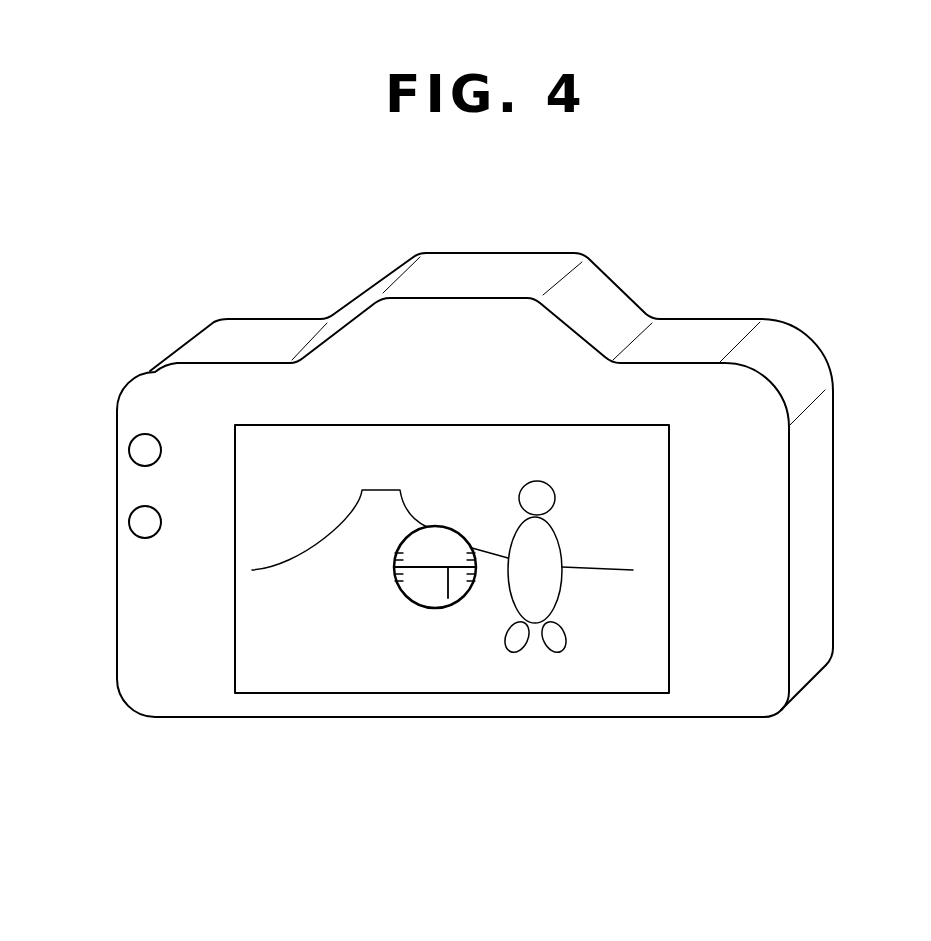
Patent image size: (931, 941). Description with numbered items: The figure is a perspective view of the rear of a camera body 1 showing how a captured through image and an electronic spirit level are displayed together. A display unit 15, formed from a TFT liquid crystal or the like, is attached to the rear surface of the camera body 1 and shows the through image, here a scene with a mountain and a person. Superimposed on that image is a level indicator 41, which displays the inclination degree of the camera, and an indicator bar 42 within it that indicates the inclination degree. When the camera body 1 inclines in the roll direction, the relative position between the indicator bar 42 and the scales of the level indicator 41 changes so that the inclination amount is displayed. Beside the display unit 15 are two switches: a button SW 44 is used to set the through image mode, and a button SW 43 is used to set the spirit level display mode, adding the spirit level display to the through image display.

The camera body 1 is at (153, 633).
The display unit 15 is at (223, 717).
The level indicator 41 is at (413, 603).
The indicator bar 42 is at (448, 598).
The button SW 43 is at (142, 520).
The button SW 44 is at (142, 448).